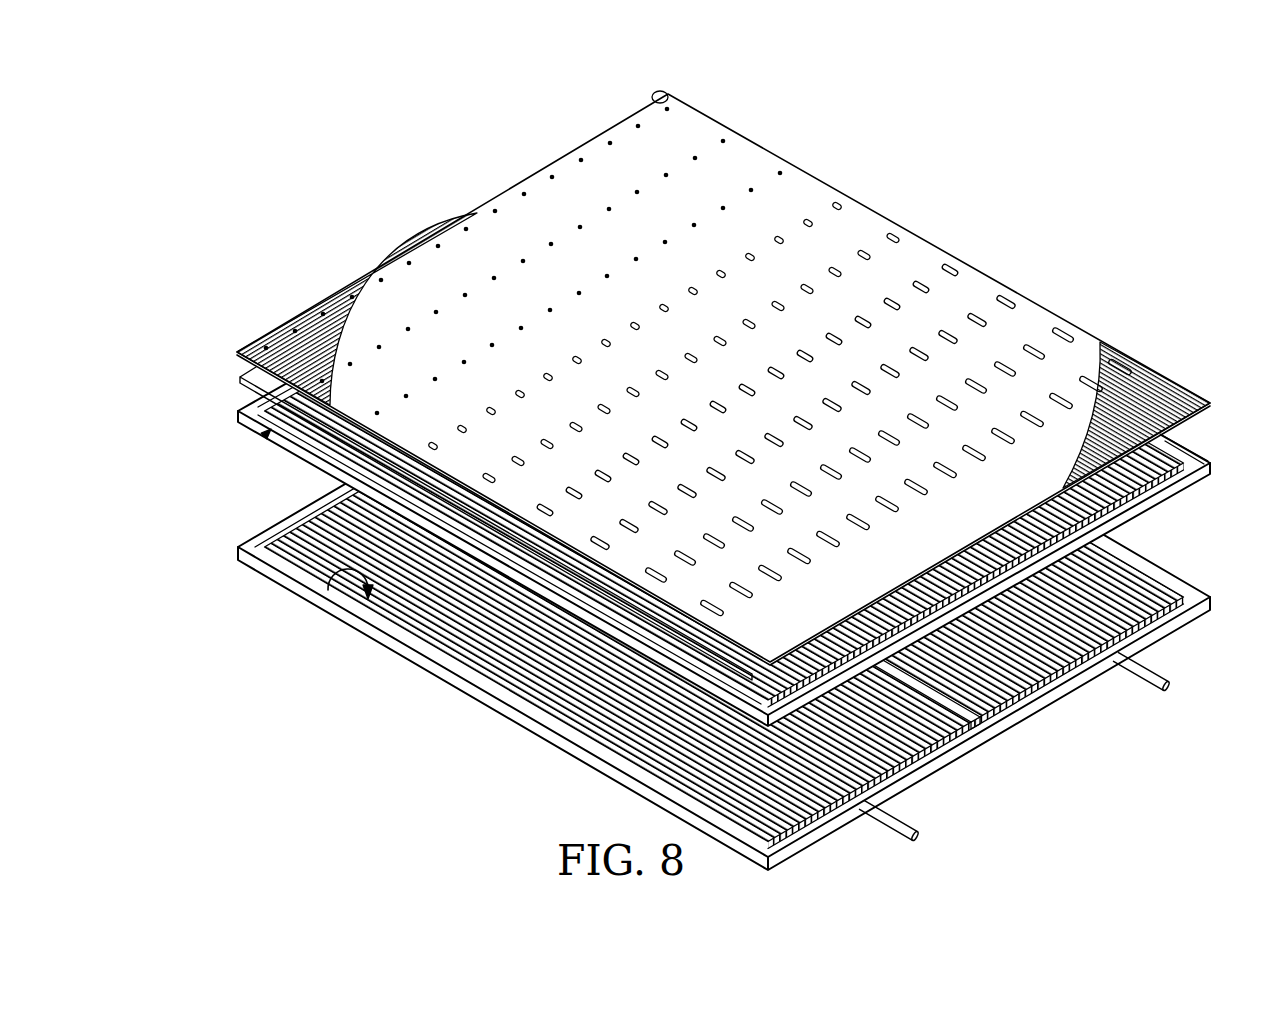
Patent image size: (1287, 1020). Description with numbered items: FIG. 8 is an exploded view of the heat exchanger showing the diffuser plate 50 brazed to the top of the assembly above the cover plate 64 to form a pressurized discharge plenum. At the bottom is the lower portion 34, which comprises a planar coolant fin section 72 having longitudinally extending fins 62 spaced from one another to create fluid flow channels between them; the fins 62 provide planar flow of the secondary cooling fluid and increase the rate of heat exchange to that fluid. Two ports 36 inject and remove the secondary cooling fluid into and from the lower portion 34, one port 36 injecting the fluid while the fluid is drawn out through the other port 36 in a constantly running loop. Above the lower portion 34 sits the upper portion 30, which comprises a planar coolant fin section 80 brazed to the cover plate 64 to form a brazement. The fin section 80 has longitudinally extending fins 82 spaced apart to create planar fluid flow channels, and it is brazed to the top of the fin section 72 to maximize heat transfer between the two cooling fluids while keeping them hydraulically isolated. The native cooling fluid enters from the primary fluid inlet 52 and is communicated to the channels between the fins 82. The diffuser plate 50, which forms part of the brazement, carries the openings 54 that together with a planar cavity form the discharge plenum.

The upper portion 30 is at (317, 460).
The lower portion 34 is at (436, 666).
The ports 36 is at (1138, 690).
The diffuser plate 50 is at (908, 248).
The primary fluid inlet 52 is at (655, 91).
The openings 54 is at (1036, 345).
The fins 62 is at (580, 727).
The cover plate 64 is at (253, 372).
The coolant fin section 72 is at (325, 590).
The coolant fin section 80 is at (266, 433).
The fins 82 is at (1172, 437).